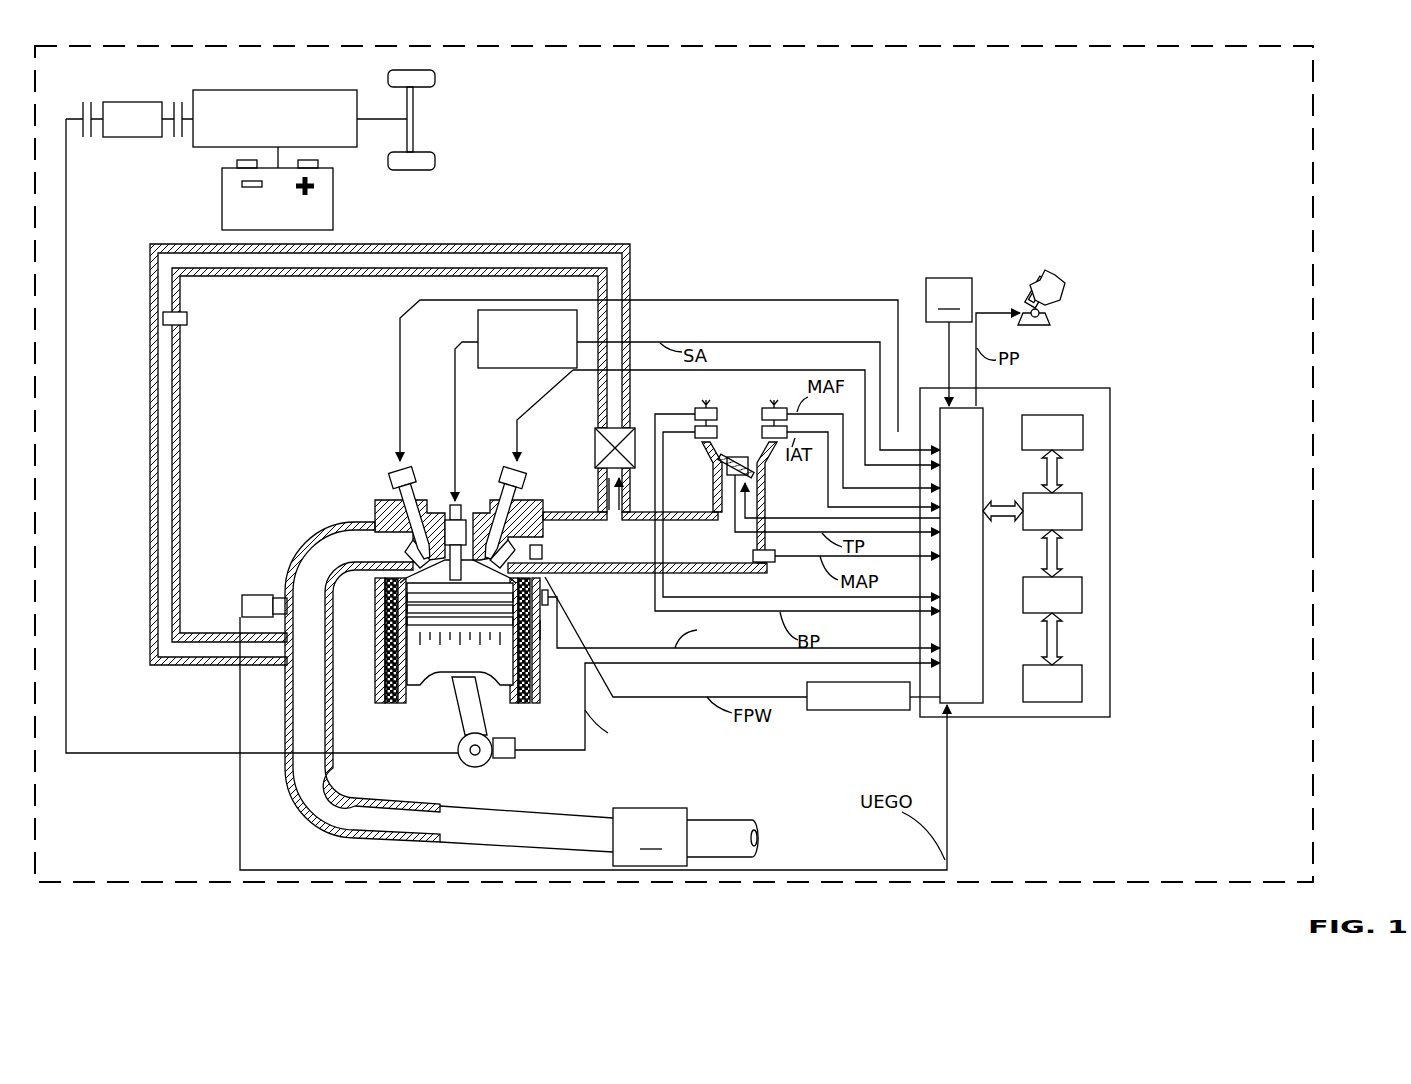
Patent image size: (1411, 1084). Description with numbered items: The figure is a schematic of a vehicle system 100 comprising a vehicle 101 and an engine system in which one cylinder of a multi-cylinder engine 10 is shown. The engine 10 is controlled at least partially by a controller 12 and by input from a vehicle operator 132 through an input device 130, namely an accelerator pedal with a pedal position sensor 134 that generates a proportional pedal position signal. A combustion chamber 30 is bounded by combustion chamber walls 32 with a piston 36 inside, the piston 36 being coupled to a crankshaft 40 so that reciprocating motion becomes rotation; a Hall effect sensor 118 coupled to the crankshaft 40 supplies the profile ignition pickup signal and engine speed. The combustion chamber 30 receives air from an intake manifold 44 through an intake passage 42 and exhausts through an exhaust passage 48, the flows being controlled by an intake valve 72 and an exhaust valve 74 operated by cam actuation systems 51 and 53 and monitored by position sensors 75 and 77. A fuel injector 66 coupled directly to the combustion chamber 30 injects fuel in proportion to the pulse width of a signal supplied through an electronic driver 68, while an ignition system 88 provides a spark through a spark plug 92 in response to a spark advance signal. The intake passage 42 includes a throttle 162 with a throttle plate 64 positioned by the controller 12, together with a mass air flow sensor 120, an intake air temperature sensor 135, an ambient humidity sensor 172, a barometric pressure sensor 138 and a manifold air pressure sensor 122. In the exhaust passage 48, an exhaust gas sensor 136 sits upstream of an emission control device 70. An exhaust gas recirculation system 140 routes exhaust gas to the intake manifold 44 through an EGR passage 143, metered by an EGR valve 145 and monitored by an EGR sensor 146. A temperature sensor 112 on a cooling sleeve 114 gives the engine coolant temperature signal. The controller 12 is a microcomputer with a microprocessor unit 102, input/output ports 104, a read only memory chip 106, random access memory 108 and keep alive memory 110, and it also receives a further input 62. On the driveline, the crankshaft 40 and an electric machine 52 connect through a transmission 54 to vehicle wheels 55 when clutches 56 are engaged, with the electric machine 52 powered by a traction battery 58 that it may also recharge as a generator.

The vehicle system 100 is at (1328, 82).
The vehicle 101 is at (1313, 520).
The engine 10 is at (600, 607).
The controller 12 is at (1044, 541).
The combustion chamber 30 is at (375, 678).
The combustion chamber walls 32 is at (392, 703).
The piston 36 is at (440, 680).
The crankshaft 40 is at (462, 764).
The intake passage 42 is at (752, 451).
The intake manifold 44 is at (700, 556).
The exhaust passage 48 is at (362, 556).
The cam actuation system 51 is at (505, 468).
The electric machine 52 is at (135, 137).
The cam actuation system 53 is at (412, 468).
The transmission 54 is at (330, 147).
The vehicle wheels 55 is at (420, 170).
The clutch 56 is at (85, 104).
The traction battery 58 is at (333, 205).
The brake pedal sensor 62 is at (949, 342).
The throttle plate 64 is at (730, 468).
The fuel injector 66 is at (535, 560).
The electronic driver 68 is at (855, 710).
The emission control device 70 is at (685, 837).
The intake valve 72 is at (505, 560).
The exhaust valve 74 is at (408, 548).
The position sensor 75 is at (518, 484).
The position sensor 77 is at (398, 484).
The ignition system 88 is at (709, 380).
The spark plug 92 is at (460, 515).
The microprocessor unit 102 is at (1082, 507).
The input/output ports 104 is at (983, 415).
The read only memory chip 106 is at (1083, 425).
The random access memory 108 is at (1082, 590).
The keep alive memory 110 is at (1082, 678).
The temperature sensor 112 is at (548, 607).
The cooling sleeve 114 is at (538, 645).
The Hall effect sensor 118 is at (505, 758).
The mass air flow sensor 120 is at (765, 408).
The manifold air pressure sensor 122 is at (770, 562).
The input device 130 is at (1018, 292).
The vehicle operator 132 is at (1062, 285).
The pedal position sensor 134 is at (1050, 318).
The intake air temperature sensor 135 is at (762, 432).
The exhaust gas sensor 136 is at (242, 605).
The barometric pressure sensor 138 is at (695, 414).
The exhaust gas recirculation system 140 is at (508, 240).
The EGR passage 143 is at (385, 244).
The EGR valve 145 is at (595, 448).
The EGR sensor 146 is at (187, 320).
The throttle 162 is at (755, 472).
The ambient humidity sensor 172 is at (700, 438).